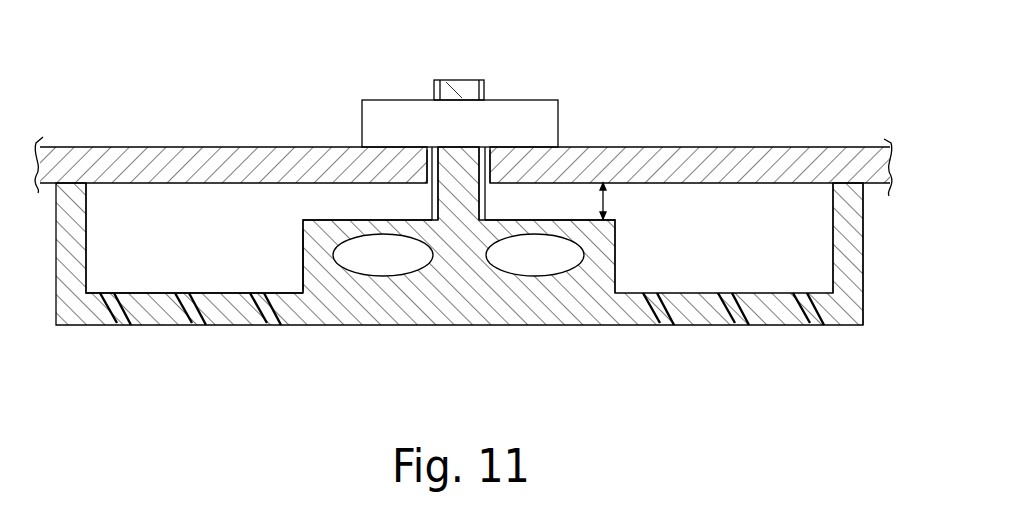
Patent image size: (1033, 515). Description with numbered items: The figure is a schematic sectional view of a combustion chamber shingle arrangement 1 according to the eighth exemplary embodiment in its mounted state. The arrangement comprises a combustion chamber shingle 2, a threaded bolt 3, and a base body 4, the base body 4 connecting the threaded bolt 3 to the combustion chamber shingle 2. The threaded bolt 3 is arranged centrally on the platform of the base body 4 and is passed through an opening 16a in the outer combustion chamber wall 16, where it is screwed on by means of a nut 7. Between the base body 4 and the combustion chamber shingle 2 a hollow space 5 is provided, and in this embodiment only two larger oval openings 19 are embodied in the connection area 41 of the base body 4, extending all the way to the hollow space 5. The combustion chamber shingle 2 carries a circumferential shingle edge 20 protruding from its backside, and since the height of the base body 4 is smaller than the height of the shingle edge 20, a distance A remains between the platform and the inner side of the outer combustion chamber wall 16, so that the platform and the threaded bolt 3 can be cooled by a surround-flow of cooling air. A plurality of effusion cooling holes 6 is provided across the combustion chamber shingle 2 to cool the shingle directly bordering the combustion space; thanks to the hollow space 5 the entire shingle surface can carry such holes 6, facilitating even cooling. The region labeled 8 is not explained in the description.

The combustion chamber shingle arrangement 1 is at (212, 86).
The combustion chamber shingle 2 is at (699, 306).
The threaded bolt 3 is at (463, 93).
The base body 4 is at (315, 220).
The hollow space 5 is at (377, 256).
The effusion cooling holes 6 is at (122, 308).
The nut 7 is at (391, 117).
The cavity 8 is at (156, 249).
The outer combustion chamber wall 16 is at (718, 172).
The opening 16a is at (489, 174).
The oval openings 19 is at (408, 263).
The shingle edge 20 is at (843, 243).
The connection area 41 is at (317, 258).
The distance A is at (603, 205).